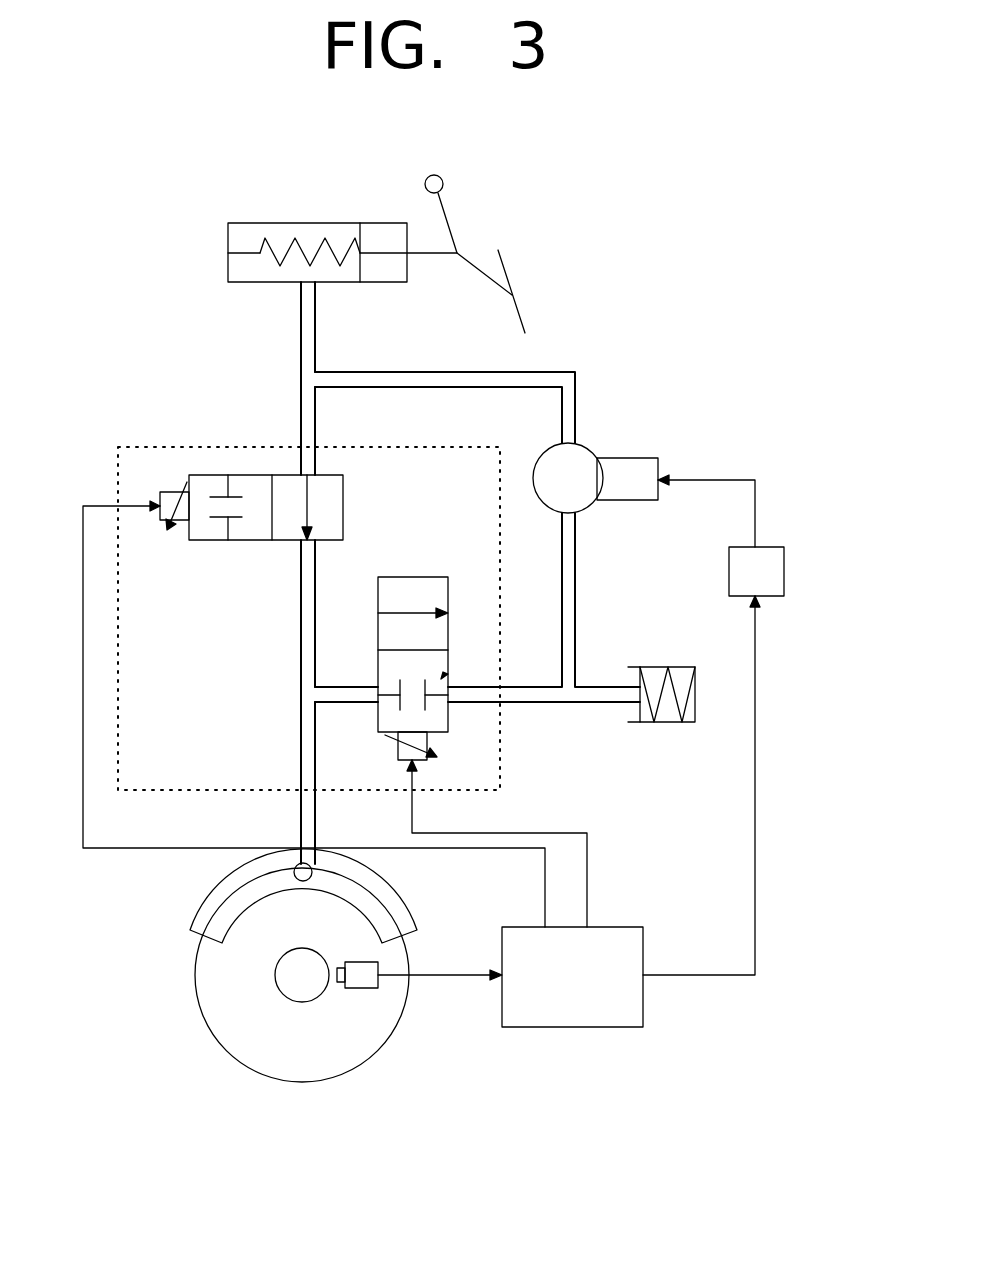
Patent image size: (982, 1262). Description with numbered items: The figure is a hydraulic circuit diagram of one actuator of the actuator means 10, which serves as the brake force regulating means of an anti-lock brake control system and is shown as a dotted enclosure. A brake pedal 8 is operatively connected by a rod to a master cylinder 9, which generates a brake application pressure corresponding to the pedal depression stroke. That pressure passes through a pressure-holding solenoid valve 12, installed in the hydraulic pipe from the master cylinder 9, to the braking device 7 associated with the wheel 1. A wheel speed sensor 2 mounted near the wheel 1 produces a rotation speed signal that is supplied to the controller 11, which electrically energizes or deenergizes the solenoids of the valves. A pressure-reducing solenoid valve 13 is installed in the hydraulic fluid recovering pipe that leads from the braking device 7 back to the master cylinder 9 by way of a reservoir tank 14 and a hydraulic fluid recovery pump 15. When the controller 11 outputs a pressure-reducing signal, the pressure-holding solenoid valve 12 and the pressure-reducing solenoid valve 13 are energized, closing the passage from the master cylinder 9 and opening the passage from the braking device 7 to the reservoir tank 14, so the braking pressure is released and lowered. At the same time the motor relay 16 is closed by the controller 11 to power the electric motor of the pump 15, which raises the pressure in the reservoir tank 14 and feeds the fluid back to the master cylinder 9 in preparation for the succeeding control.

The wheel 1 is at (200, 1012).
The wheel speed sensor 2 is at (368, 990).
The braking device 7 is at (196, 913).
The brake pedal 8 is at (475, 263).
The master cylinder 9 is at (228, 236).
The actuator means 10 is at (118, 468).
The controller 11 is at (643, 945).
The pressure-holding solenoid valve 12 is at (212, 470).
The pressure-reducing solenoid valve 13 is at (415, 577).
The reservoir tank 14 is at (665, 667).
The hydraulic fluid recovery pump 15 is at (626, 458).
The motor relay 16 is at (784, 556).